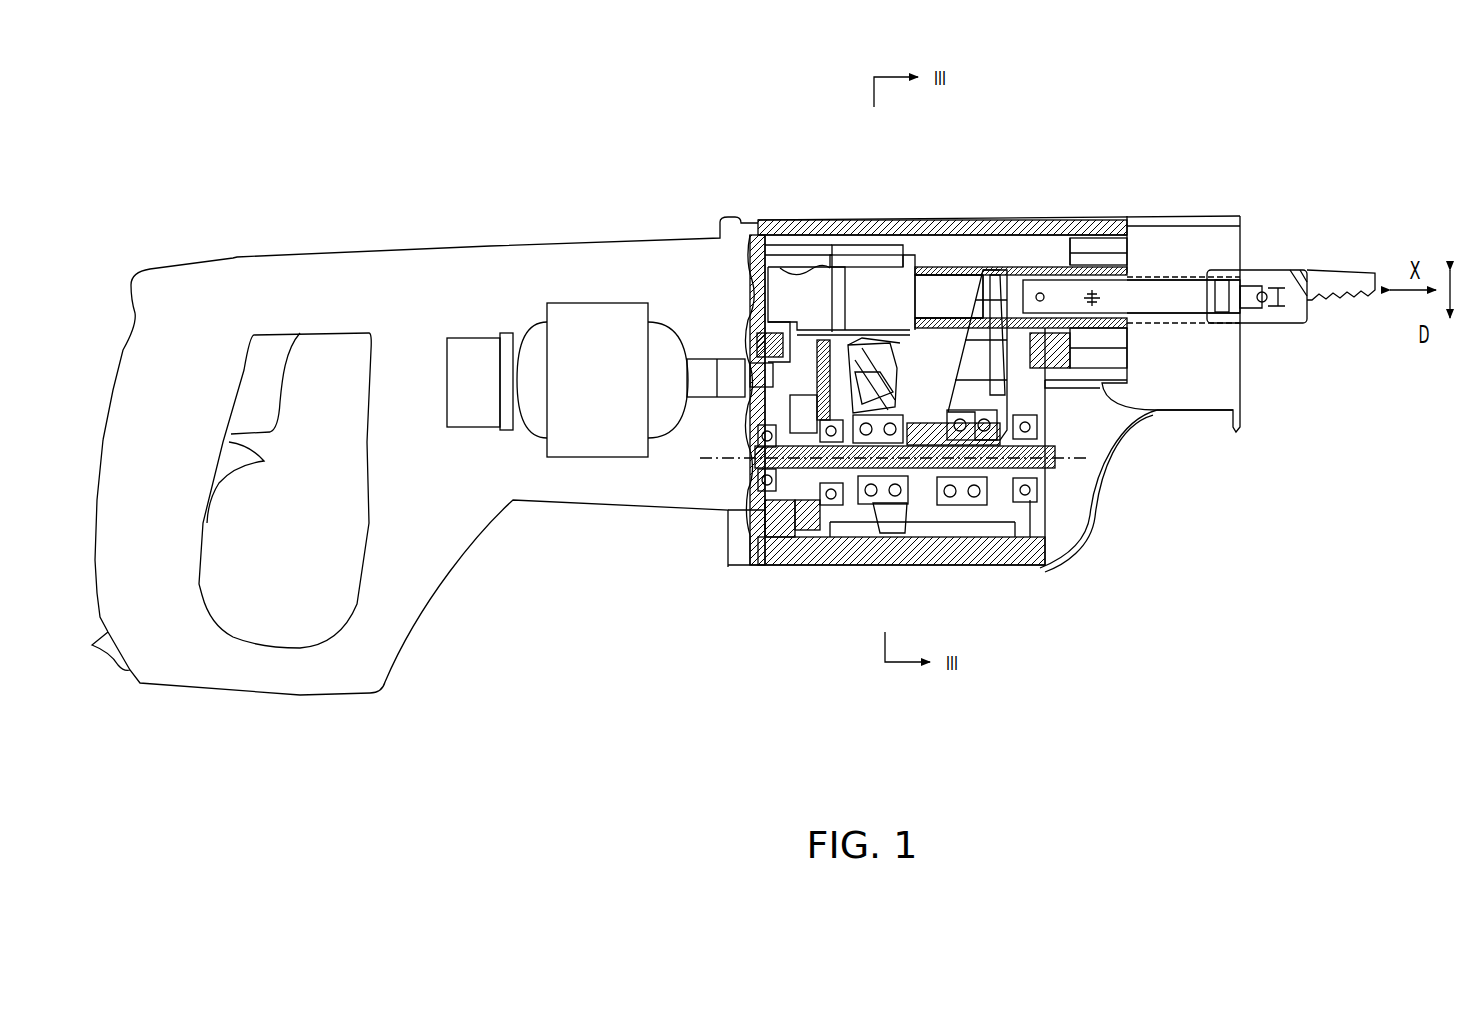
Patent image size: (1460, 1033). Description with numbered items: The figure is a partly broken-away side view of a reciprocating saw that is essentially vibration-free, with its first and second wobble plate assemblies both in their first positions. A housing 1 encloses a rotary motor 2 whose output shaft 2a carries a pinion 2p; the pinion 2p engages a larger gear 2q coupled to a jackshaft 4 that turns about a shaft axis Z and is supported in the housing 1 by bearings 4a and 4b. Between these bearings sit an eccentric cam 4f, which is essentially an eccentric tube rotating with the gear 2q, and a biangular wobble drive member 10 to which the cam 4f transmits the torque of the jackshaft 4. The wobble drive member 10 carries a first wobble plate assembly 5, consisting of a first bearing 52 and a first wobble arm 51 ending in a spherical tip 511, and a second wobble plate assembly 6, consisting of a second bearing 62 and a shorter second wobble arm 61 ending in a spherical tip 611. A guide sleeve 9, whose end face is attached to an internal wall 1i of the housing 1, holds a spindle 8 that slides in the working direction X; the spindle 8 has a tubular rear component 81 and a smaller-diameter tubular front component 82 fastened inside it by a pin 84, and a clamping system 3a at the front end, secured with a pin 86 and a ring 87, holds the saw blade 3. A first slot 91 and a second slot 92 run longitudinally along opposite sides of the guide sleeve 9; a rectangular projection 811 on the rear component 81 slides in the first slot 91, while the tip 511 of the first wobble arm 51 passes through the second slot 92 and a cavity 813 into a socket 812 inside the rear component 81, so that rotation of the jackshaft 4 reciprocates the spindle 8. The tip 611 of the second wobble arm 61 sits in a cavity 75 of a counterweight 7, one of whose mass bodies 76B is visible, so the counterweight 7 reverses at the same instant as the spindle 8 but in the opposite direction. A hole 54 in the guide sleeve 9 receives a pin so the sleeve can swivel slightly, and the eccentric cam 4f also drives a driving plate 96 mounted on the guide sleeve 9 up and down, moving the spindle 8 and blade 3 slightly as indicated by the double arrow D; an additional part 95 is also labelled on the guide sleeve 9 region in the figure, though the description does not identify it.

The housing 1 is at (581, 243).
The internal wall 1i is at (1153, 413).
The rotary motor 2 is at (577, 330).
The output shaft 2a is at (731, 370).
The pinion 2p is at (833, 344).
The gear 2q is at (810, 533).
The saw blade 3 is at (1325, 280).
The clamping system 3a is at (1275, 268).
The jackshaft 4 is at (1043, 385).
The bearing 4a is at (1027, 505).
The bearing 4b is at (762, 513).
The eccentric cam 4f is at (793, 540).
The first wobble plate assembly 5 is at (960, 365).
The first wobble arm 51 is at (965, 395).
The spherical tip 511 is at (1040, 293).
The first bearing 52 is at (970, 500).
The hole 54 is at (1095, 293).
The second wobble plate assembly 6 is at (898, 376).
The second wobble arm 61 is at (875, 405).
The second bearing 62 is at (890, 513).
The spherical tip 611 is at (860, 338).
The counterweight 7 is at (835, 258).
The cavity 75 is at (808, 268).
The second mass body 76B is at (868, 258).
The spindle 8 is at (975, 262).
The rear component 81 is at (928, 280).
The projection 811 is at (945, 300).
The socket 812 is at (1010, 262).
The cavity 813 is at (1032, 347).
The front component 82 is at (1165, 280).
The pin 84 is at (1043, 293).
The pin 86 is at (1200, 320).
The ring 87 is at (1130, 327).
The guide sleeve 9 is at (1072, 258).
The first slot 91 is at (903, 335).
The second slot 92 is at (1043, 382).
The guide bar 95 is at (1225, 330).
The driving plate 96 is at (787, 237).
The biangular wobble drive member 10 is at (927, 500).
The shaft axis Z is at (895, 459).